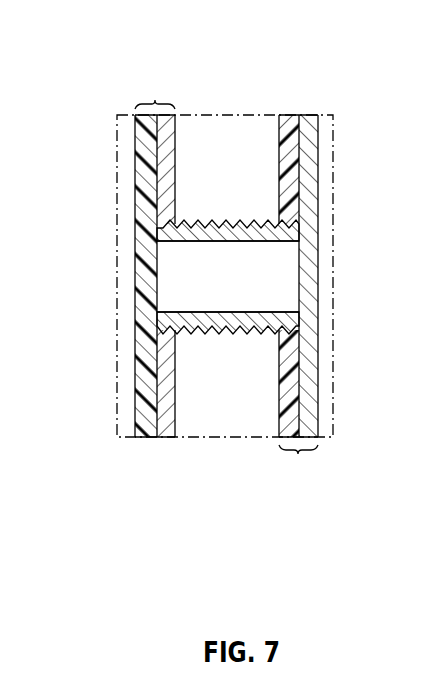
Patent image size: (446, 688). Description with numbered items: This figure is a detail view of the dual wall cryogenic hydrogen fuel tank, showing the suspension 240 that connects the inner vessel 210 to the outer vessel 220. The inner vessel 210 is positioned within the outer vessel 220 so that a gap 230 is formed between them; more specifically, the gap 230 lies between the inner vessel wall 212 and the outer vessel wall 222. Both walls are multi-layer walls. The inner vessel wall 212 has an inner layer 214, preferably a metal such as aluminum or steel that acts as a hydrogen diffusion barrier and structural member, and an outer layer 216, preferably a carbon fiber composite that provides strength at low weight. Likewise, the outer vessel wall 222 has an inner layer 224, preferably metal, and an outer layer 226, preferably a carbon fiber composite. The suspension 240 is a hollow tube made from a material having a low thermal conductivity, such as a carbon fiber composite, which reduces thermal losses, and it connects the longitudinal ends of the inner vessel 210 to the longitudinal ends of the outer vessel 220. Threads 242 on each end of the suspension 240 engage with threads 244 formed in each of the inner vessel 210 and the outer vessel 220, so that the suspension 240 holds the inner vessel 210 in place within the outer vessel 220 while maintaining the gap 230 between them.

The inner vessel 210 is at (287, 115).
The inner vessel wall 212 is at (298, 466).
The inner layer 214 is at (312, 426).
The outer layer 216 is at (285, 426).
The outer vessel 220 is at (150, 420).
The outer vessel wall 222 is at (156, 90).
The inner layer 224 is at (157, 142).
The outer layer 226 is at (150, 134).
The gap 230 is at (265, 115).
The suspension 240 is at (236, 330).
The threads 242 is at (255, 219).
The threads 244 is at (297, 243).